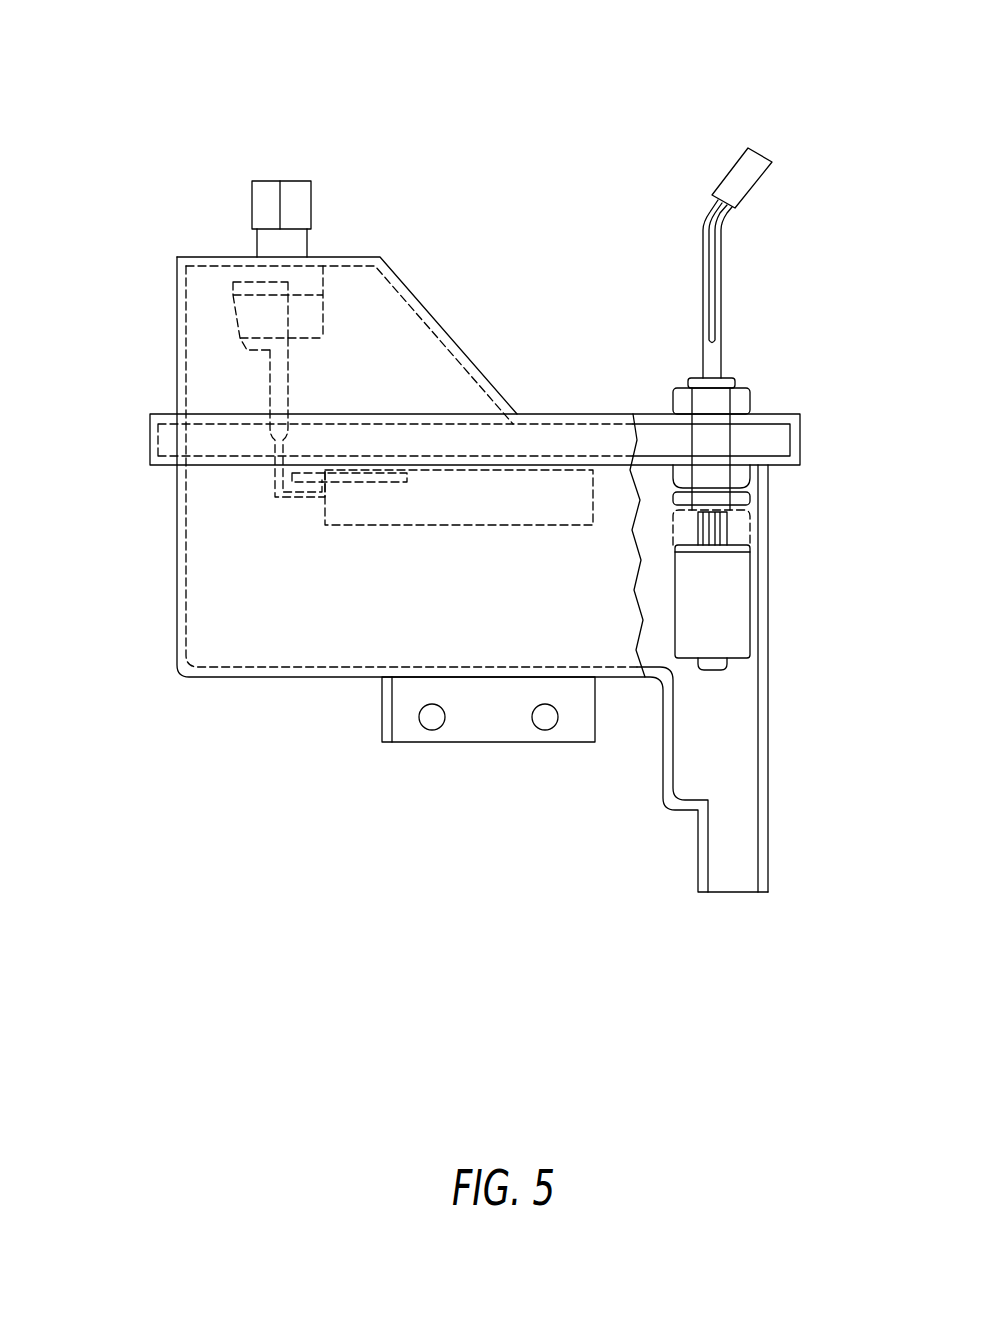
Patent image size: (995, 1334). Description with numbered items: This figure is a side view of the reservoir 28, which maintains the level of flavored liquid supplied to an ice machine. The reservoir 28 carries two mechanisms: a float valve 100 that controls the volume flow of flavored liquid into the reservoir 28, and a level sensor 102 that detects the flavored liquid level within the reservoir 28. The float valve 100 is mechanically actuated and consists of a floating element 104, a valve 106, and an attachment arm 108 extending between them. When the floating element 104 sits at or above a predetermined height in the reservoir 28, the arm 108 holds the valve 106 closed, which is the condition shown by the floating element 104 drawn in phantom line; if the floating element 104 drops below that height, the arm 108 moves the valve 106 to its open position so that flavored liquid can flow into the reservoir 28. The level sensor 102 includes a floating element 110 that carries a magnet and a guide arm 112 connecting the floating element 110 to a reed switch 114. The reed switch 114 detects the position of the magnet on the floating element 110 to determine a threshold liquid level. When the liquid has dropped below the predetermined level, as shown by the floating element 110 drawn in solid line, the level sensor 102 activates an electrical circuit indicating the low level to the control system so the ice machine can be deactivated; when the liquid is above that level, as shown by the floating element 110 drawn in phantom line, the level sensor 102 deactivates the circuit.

The reservoir 28 is at (574, 240).
The float valve 100 is at (252, 205).
The level sensor 102 is at (737, 393).
The floating element 104 is at (440, 525).
The valve 106 is at (260, 282).
The attachment arm 108 is at (268, 390).
The floating element 110 is at (752, 622).
The guide arm 112 is at (732, 528).
The reed switch 114 is at (672, 432).